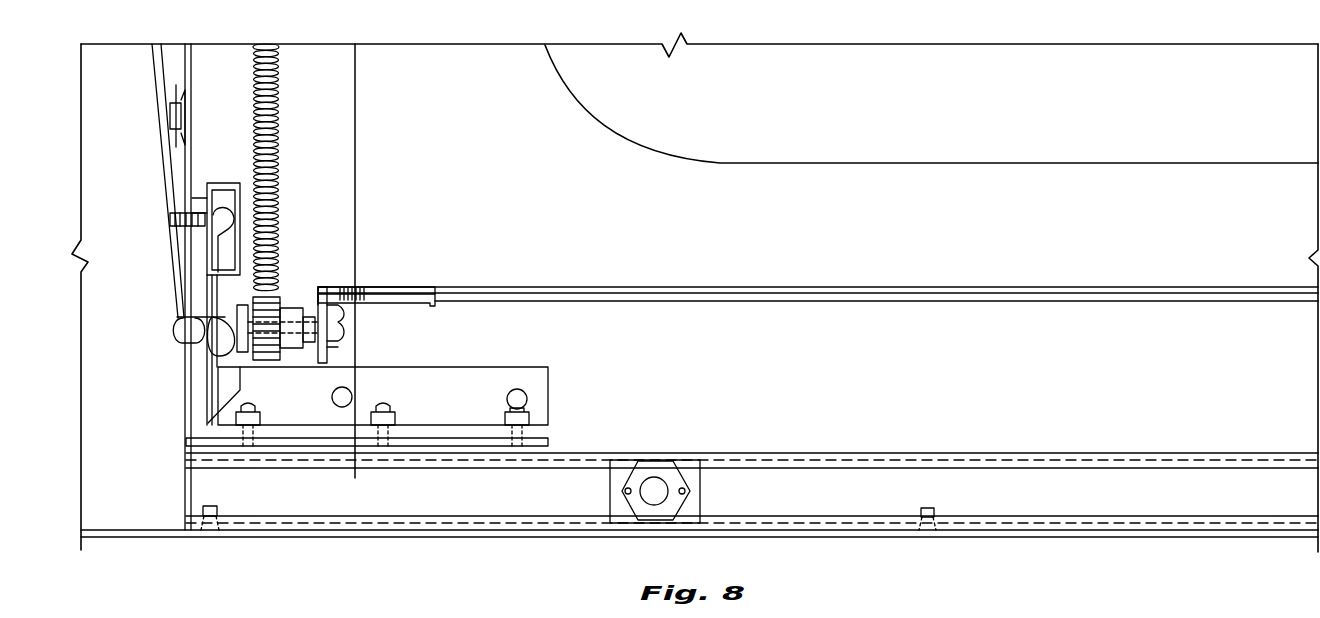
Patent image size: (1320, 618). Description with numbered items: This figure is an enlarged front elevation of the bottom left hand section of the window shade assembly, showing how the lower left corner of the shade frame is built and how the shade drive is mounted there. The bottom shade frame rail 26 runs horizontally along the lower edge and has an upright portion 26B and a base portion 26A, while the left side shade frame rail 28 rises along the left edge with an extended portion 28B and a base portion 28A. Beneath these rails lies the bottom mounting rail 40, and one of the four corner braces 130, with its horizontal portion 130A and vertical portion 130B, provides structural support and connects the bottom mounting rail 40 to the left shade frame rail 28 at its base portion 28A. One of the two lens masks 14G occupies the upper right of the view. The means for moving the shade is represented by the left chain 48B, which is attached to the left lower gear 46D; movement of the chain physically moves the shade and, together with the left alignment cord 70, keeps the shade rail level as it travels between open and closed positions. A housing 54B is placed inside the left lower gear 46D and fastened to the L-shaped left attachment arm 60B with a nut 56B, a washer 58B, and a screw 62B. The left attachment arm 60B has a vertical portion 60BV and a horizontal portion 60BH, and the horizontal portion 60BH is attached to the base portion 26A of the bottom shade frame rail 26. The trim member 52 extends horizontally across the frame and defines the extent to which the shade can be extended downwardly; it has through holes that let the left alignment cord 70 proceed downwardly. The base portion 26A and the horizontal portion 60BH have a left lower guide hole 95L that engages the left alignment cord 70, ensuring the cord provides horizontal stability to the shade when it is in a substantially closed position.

The lens mask 14G is at (929, 134).
The bottom shade frame rail 26 is at (695, 292).
The base portion of bottom shade frame rail 26A is at (795, 303).
The upright portion of bottom shade frame rail 26B is at (1148, 457).
The left side shade frame rail 28 is at (154, 287).
The base portion of left side shade frame rail 28A is at (185, 382).
The extended portion of left side shade frame rail 28B is at (153, 62).
The bottom mounting rail 40 is at (430, 478).
The left lower gear 46D is at (288, 304).
The left chain 48B is at (278, 127).
The trim member 52 is at (922, 287).
The housing 54B is at (243, 353).
The nut 56B is at (305, 318).
The washer 58B is at (316, 358).
The left attachment arm 60B is at (387, 297).
The horizontal portion of left attachment arm 60BH is at (420, 305).
The vertical portion of left attachment arm 60BV is at (328, 357).
The screw 62B is at (335, 323).
The left alignment cord 70 is at (356, 135).
The left lower guide hole 95L is at (360, 293).
The corner brace 130 is at (217, 383).
The horizontal portion of corner brace 130A is at (460, 367).
The vertical portion of corner brace 130B is at (206, 253).